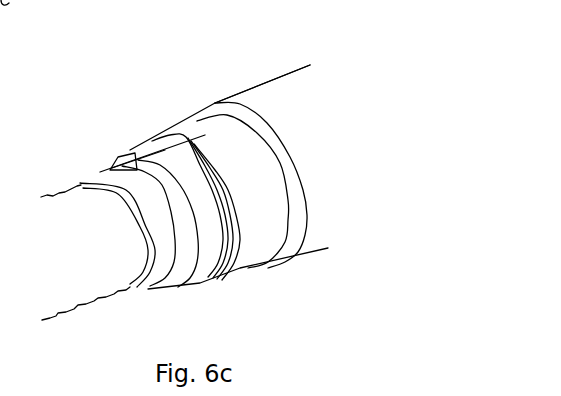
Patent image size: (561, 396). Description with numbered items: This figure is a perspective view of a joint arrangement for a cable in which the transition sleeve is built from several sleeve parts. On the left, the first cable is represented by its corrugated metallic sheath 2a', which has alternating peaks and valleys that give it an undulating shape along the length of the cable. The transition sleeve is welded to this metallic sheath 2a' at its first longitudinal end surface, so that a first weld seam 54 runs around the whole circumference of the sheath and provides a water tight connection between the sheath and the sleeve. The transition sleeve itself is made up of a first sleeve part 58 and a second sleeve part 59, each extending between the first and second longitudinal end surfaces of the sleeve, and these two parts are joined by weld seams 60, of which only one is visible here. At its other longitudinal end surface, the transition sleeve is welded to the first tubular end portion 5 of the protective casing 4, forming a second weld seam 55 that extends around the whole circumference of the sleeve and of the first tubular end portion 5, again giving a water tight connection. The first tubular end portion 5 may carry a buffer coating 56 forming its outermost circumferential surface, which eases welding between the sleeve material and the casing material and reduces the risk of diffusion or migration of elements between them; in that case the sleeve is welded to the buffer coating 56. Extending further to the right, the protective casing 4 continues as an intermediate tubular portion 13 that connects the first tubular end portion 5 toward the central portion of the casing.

The metallic sheath 2a' is at (80, 224).
The protective casing 4 is at (258, 83).
The first tubular end portion 5 is at (227, 125).
The intermediate tubular portion 13 is at (298, 98).
The first weld seam 54 is at (146, 223).
The second weld seam 55 is at (228, 213).
The buffer coating 56 is at (233, 257).
The first sleeve part 58 is at (117, 152).
The second sleeve part 59 is at (207, 252).
The weld seams 60 is at (135, 153).